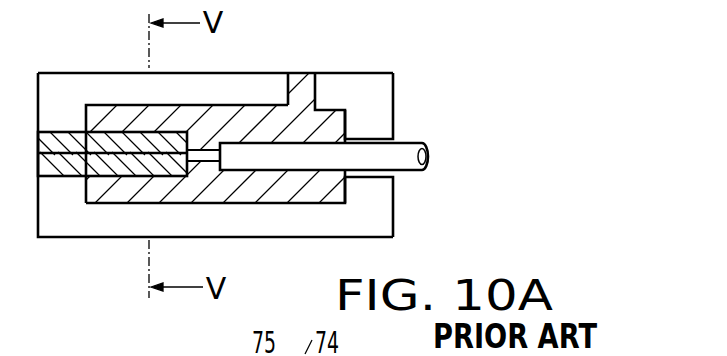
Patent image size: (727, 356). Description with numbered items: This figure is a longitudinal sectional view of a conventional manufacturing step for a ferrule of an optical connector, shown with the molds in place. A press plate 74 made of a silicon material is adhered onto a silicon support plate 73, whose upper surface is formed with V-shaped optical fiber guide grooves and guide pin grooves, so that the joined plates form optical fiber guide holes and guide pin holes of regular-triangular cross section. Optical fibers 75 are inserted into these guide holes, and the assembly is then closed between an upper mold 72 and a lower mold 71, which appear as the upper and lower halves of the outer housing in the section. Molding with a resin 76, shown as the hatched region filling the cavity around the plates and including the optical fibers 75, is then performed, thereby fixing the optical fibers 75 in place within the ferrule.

The lower mold 71 is at (378, 210).
The upper mold 72 is at (383, 103).
The silicon support plate 73 is at (53, 178).
The press plate 74 is at (60, 142).
The optical fibers 75 is at (200, 153).
The resin 76 is at (268, 118).